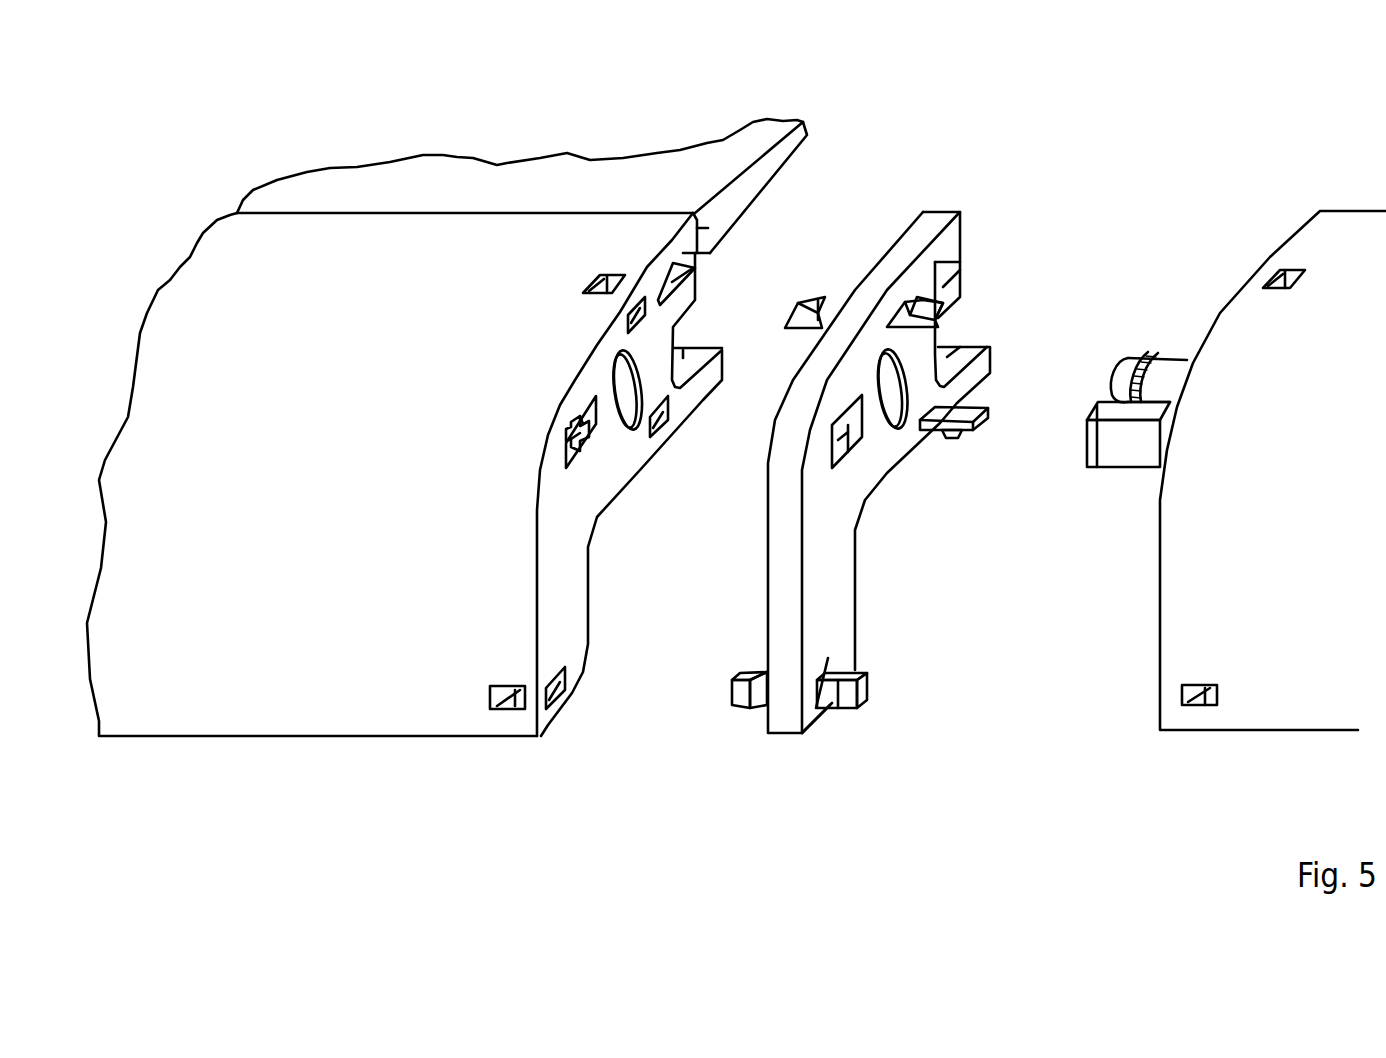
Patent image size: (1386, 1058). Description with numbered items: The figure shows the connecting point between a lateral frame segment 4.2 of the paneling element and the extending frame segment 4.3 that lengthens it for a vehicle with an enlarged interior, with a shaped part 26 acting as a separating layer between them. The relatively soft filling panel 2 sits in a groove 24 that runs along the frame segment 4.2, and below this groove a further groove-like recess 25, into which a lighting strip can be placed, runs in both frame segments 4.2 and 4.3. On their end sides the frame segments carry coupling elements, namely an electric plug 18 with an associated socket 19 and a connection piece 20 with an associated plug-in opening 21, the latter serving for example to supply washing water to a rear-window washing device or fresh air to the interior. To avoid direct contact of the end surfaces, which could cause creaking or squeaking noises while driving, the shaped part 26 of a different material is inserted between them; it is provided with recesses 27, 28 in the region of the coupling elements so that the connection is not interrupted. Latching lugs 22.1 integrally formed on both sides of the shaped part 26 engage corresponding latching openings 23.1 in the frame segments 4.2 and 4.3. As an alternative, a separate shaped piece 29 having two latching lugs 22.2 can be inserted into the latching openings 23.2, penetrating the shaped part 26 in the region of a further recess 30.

The filling panel 2 is at (707, 170).
The lateral frame segment 4.2 is at (310, 693).
The extending frame segment 4.3 is at (1275, 688).
The electric plug 18 is at (1120, 452).
The socket 19 is at (565, 447).
The connection piece 20 is at (1123, 377).
The plug-in opening 21 is at (625, 382).
The latching lug 22.1 is at (930, 298).
The latching lug 22.2 is at (742, 706).
The latching opening 23.1 is at (600, 280).
The latching opening 23.2 is at (513, 700).
The groove 24 is at (693, 263).
The groove-like recess 25 is at (677, 350).
The shaped part 26 is at (837, 532).
The recess 27 is at (838, 470).
The recess 28 is at (897, 388).
The shaped piece 29 is at (750, 680).
The recess 30 is at (802, 727).